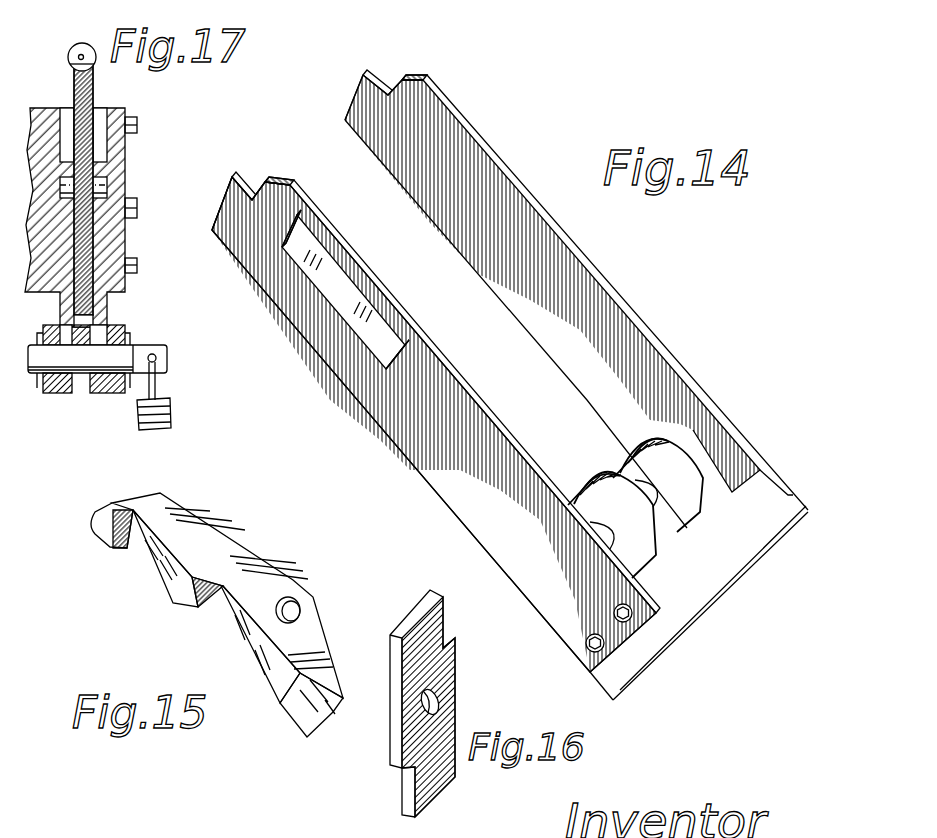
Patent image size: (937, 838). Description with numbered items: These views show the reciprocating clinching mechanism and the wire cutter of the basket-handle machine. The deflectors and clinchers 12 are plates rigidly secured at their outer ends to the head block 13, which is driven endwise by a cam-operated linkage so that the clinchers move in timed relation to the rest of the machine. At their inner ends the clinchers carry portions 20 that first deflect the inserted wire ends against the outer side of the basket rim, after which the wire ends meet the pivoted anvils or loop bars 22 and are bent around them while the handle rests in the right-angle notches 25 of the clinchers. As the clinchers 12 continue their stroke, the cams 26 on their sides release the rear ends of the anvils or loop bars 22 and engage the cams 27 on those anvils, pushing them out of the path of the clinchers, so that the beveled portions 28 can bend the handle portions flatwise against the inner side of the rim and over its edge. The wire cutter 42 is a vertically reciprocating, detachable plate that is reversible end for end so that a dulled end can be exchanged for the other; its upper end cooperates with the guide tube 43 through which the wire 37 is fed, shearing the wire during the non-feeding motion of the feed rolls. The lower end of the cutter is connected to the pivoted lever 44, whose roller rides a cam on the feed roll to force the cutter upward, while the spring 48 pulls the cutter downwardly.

In FIG. 14, the deflectors and clinchers 12 is at (628, 303).
In FIG. 14, the head block 13 is at (700, 588).
In FIG. 14, the portions 20 is at (357, 88).
In FIG. 14, the right-angle notches 25 is at (389, 87).
In FIG. 14, the cams 26 is at (328, 280).
In FIG. 14, the beveled portions 28 is at (287, 181).
In FIG. 15, the anvils or loop bars 22 is at (210, 535).
In FIG. 15, the cams 27 is at (195, 608).
In FIG. 17, the cutter 42 is at (94, 85).
In FIG. 16, the cutter 42 is at (457, 676).
In FIG. 17, the guide tube 43 is at (80, 43).
In FIG. 17, the wire 37 is at (79, 56).
In FIG. 17, the lever 44 is at (52, 393).
In FIG. 17, the spring 48 is at (155, 429).